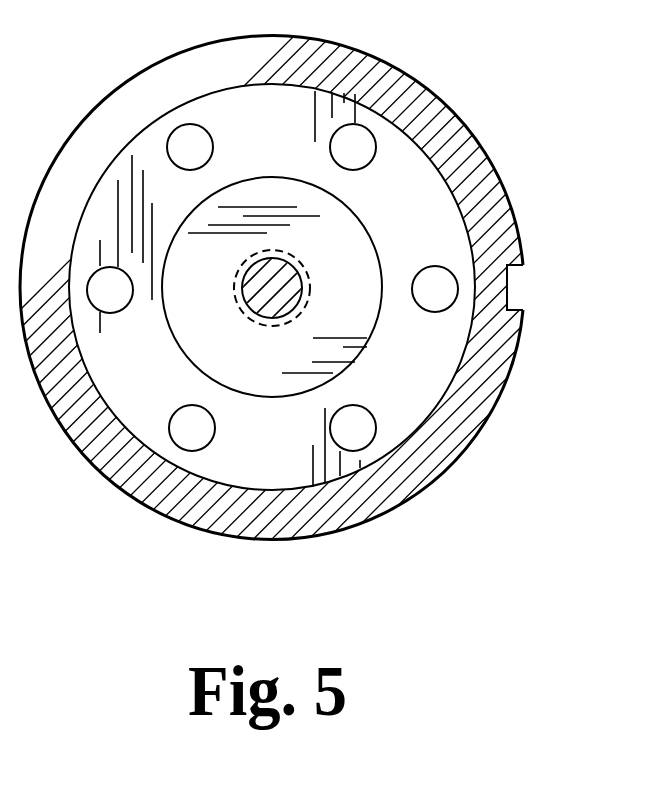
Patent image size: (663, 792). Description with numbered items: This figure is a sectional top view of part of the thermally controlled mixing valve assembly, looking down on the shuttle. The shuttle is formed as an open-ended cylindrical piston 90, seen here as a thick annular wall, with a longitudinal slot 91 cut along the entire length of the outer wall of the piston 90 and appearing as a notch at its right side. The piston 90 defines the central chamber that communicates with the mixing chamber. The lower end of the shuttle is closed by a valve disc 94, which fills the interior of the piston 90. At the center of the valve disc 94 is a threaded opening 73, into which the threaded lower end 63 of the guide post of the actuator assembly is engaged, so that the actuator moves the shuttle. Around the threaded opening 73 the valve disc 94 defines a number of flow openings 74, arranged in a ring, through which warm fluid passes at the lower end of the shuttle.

The threaded lower end 63 is at (286, 303).
The threaded opening 73 is at (304, 267).
The flow openings 74 is at (205, 442).
The cylindrical piston 90 is at (495, 372).
The longitudinal slot 91 is at (518, 289).
The valve disc 94 is at (403, 402).